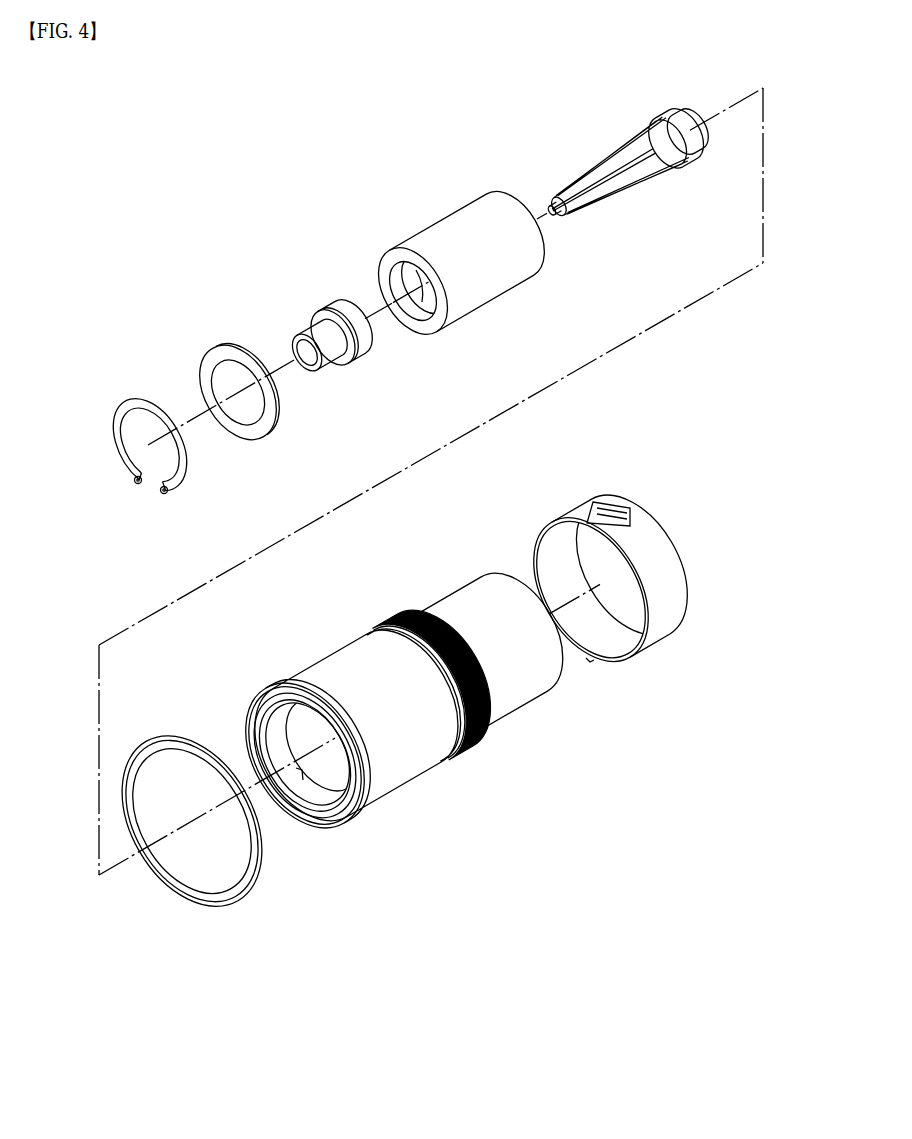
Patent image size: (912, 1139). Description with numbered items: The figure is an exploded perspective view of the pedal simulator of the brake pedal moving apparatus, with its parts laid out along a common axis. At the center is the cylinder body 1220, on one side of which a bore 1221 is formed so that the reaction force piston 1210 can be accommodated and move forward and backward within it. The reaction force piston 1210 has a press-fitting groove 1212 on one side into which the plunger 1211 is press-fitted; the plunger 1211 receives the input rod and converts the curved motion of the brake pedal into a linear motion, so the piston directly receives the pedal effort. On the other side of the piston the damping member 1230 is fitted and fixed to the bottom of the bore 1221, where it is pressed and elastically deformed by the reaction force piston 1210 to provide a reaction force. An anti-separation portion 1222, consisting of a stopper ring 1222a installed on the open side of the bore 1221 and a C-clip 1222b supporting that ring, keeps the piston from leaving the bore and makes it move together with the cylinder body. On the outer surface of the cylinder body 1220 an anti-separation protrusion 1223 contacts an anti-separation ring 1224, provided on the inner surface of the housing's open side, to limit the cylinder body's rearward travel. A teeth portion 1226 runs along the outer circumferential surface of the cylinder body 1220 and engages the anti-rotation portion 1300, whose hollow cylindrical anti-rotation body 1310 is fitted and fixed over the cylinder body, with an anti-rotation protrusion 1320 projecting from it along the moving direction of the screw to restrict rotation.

The reaction force piston 1210 is at (450, 233).
The plunger 1211 is at (337, 315).
The press-fitting groove 1212 is at (418, 303).
The cylinder body 1220 is at (407, 802).
The bore 1221 is at (300, 783).
The anti-separation portion 1222 is at (232, 273).
The stopper ring 1222a is at (246, 350).
The C-clip 1222b is at (153, 400).
The anti-separation protrusion 1223 is at (460, 762).
The anti-separation ring 1224 is at (207, 892).
The teeth portion 1226 is at (476, 748).
The damping member 1230 is at (608, 177).
The anti-rotation portion 1300 is at (690, 583).
The anti-rotation body 1310 is at (652, 553).
The anti-rotation protrusion 1320 is at (617, 510).